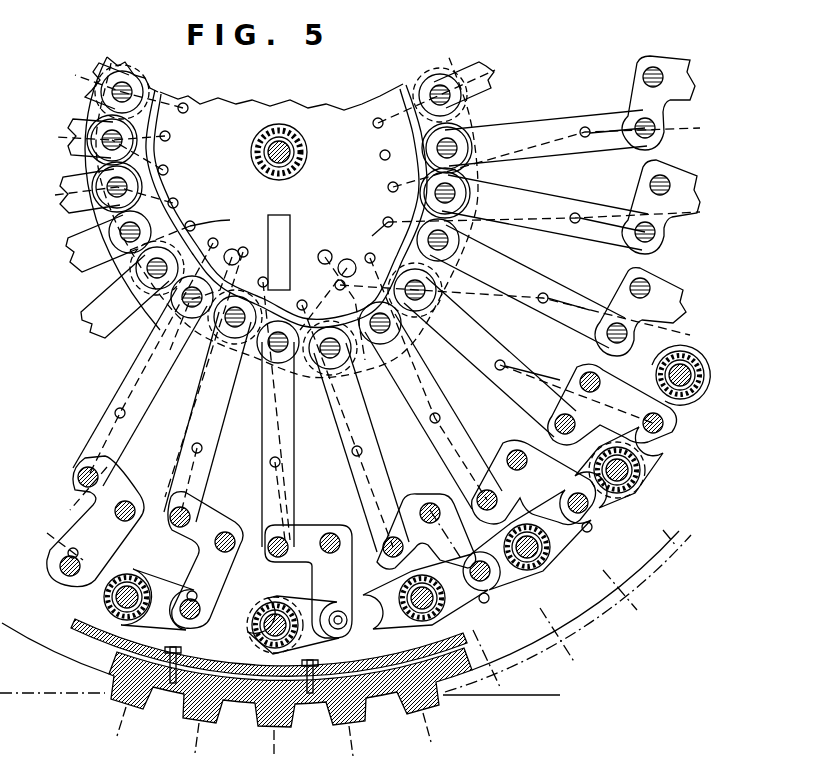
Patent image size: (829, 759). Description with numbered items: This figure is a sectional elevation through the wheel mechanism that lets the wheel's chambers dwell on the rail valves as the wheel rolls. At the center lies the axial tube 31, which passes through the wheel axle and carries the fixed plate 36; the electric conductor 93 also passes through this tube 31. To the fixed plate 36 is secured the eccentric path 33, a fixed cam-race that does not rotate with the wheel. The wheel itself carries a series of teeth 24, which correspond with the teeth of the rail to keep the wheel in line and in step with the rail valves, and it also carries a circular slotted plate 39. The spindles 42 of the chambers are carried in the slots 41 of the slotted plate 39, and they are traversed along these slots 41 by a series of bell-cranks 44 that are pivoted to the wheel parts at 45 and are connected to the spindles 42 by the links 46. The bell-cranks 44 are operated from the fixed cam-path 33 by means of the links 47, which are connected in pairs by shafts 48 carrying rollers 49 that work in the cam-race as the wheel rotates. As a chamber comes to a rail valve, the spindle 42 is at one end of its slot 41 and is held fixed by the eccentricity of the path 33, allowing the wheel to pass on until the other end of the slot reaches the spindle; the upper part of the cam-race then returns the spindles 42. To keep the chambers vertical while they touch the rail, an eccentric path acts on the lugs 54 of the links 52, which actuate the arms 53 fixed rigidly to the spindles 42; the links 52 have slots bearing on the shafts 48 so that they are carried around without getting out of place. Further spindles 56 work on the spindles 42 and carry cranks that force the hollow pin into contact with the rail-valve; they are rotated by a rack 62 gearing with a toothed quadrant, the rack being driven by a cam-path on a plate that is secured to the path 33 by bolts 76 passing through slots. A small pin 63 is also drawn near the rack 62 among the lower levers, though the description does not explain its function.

The teeth 24 is at (135, 712).
The tube 31 is at (305, 152).
The eccentric path 33 is at (200, 200).
The fixed plate 36 is at (175, 188).
The circular slotted plate 39 is at (98, 646).
The slots 41 is at (225, 636).
The spindles 42 is at (272, 604).
The bell-cranks 44 is at (686, 152).
The pivot 45 is at (650, 182).
The links 46 is at (140, 578).
The links 47 is at (512, 190).
The shafts 48 is at (289, 226).
The rollers 49 is at (196, 229).
The links 52 is at (586, 290).
The arms 53 is at (540, 304).
The lugs 54 is at (218, 242).
The spindles 56 is at (262, 642).
The rack 62 is at (280, 488).
The pin 63 is at (268, 462).
The bolts 76 is at (172, 355).
The conductor 93 is at (266, 152).